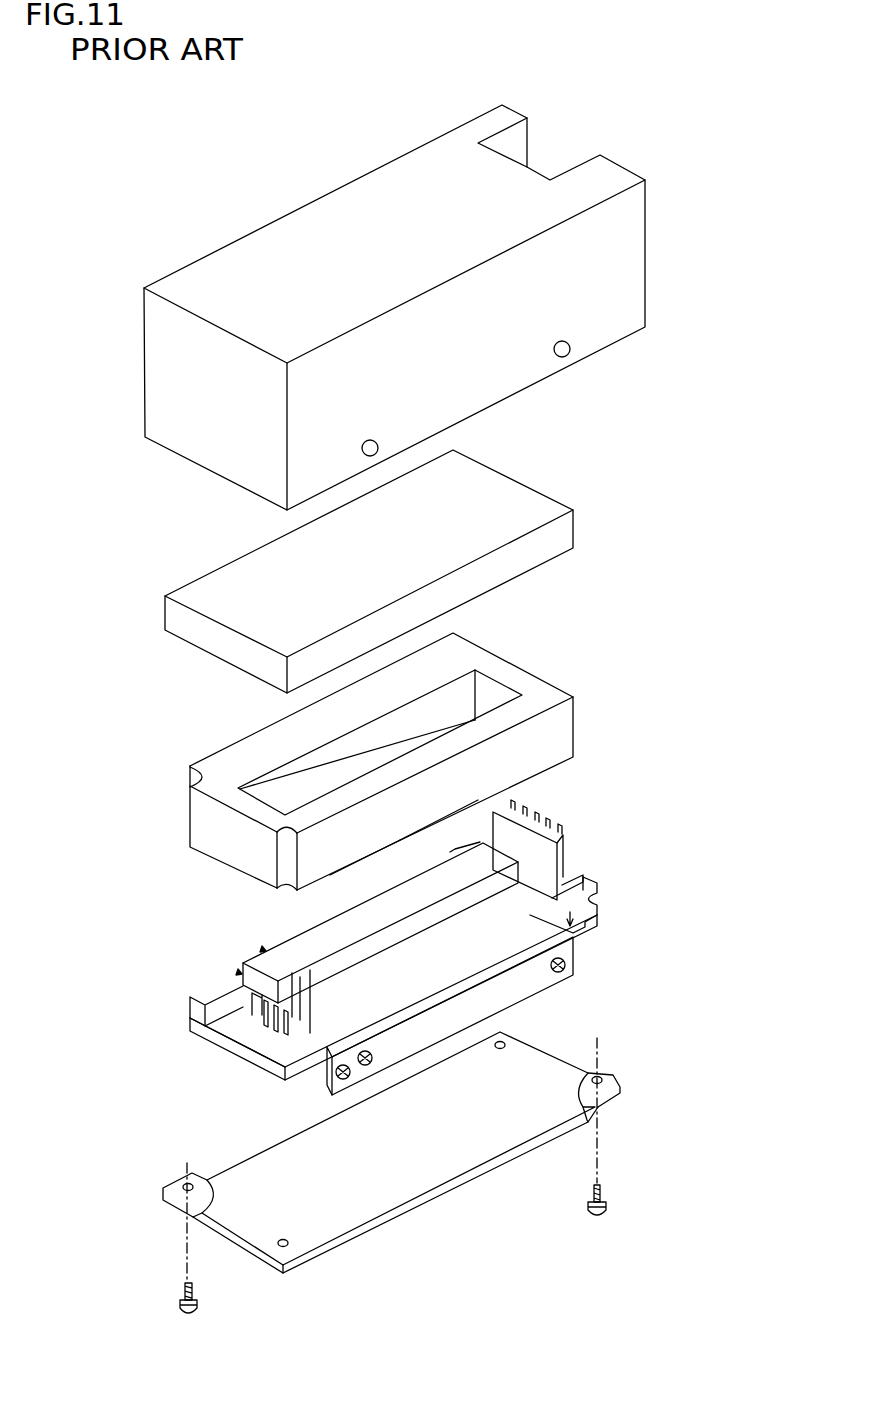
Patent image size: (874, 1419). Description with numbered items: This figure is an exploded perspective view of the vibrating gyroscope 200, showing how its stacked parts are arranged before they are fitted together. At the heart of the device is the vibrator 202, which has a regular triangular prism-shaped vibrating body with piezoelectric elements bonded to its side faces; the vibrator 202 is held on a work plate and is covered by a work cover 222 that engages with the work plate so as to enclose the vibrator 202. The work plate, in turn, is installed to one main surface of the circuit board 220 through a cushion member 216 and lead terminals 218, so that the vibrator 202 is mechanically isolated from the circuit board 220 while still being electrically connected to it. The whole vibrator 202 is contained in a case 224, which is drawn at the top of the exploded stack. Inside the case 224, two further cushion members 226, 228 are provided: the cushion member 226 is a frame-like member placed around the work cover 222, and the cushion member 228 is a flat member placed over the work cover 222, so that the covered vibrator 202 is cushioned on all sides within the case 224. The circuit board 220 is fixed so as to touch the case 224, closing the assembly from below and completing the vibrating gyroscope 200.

The vibrating gyroscope 200 is at (233, 132).
The vibrator 202 is at (338, 930).
The cushion member 216 is at (520, 918).
The lead terminals 218 is at (286, 1033).
The circuit board 220 is at (205, 1000).
The work cover 222 is at (293, 942).
The case 224 is at (626, 311).
The cushion member 226 is at (553, 727).
The cushion member 228 is at (557, 537).